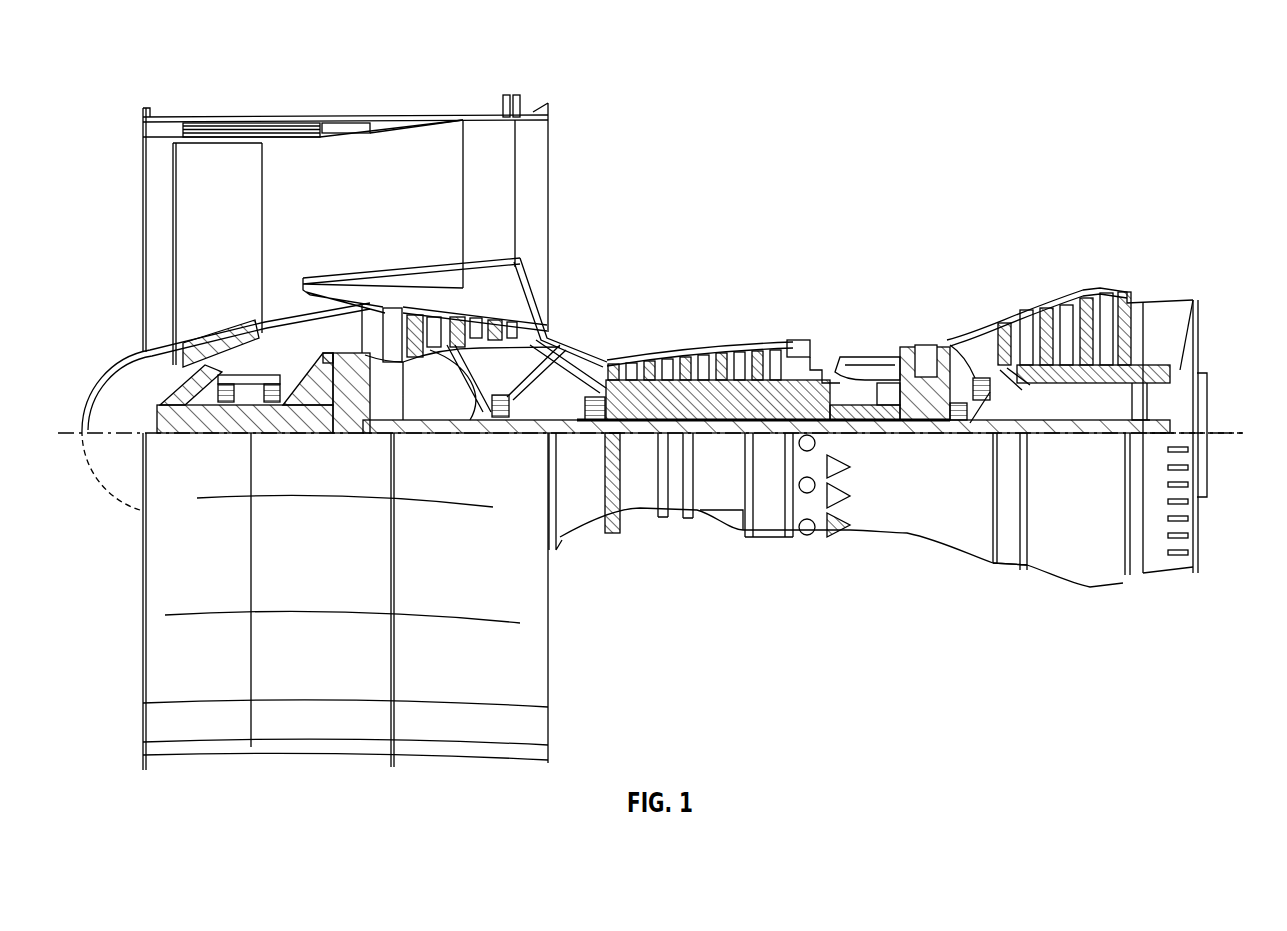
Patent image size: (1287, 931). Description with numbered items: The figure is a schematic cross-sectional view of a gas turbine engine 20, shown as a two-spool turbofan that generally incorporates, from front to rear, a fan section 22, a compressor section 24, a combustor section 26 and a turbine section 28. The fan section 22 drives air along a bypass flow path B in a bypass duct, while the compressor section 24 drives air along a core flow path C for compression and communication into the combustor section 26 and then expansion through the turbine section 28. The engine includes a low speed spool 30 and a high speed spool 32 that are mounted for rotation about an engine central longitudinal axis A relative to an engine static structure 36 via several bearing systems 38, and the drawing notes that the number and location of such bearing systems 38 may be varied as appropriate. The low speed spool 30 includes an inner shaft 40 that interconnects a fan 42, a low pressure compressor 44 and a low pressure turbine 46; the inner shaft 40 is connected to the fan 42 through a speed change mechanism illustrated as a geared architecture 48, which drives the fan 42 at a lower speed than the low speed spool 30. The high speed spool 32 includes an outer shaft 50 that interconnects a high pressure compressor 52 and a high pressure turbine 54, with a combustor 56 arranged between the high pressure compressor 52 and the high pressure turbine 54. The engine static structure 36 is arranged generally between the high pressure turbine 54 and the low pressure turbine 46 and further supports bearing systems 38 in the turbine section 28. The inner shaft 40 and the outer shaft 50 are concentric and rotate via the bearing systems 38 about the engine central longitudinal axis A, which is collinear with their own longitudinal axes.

The gas turbine engine 20 is at (1084, 126).
The fan section 22 is at (236, 111).
The compressor section 24 is at (520, 308).
The combustor section 26 is at (763, 298).
The turbine section 28 is at (1053, 375).
The low speed spool 30 is at (736, 444).
The high speed spool 32 is at (810, 345).
The engine static structure 36 is at (772, 541).
The bearing systems 38 is at (223, 408).
The inner shaft 40 is at (563, 437).
The fan 42 is at (228, 244).
The low pressure compressor 44 is at (478, 312).
The low pressure turbine 46 is at (1082, 296).
The geared architecture 48 is at (343, 433).
The outer shaft 50 is at (877, 425).
The high pressure compressor 52 is at (683, 380).
The high pressure turbine 54 is at (923, 343).
The combustor 56 is at (857, 360).
The engine central longitudinal axis A is at (1220, 430).
The bypass flow path B is at (415, 200).
The core flow path C is at (322, 318).